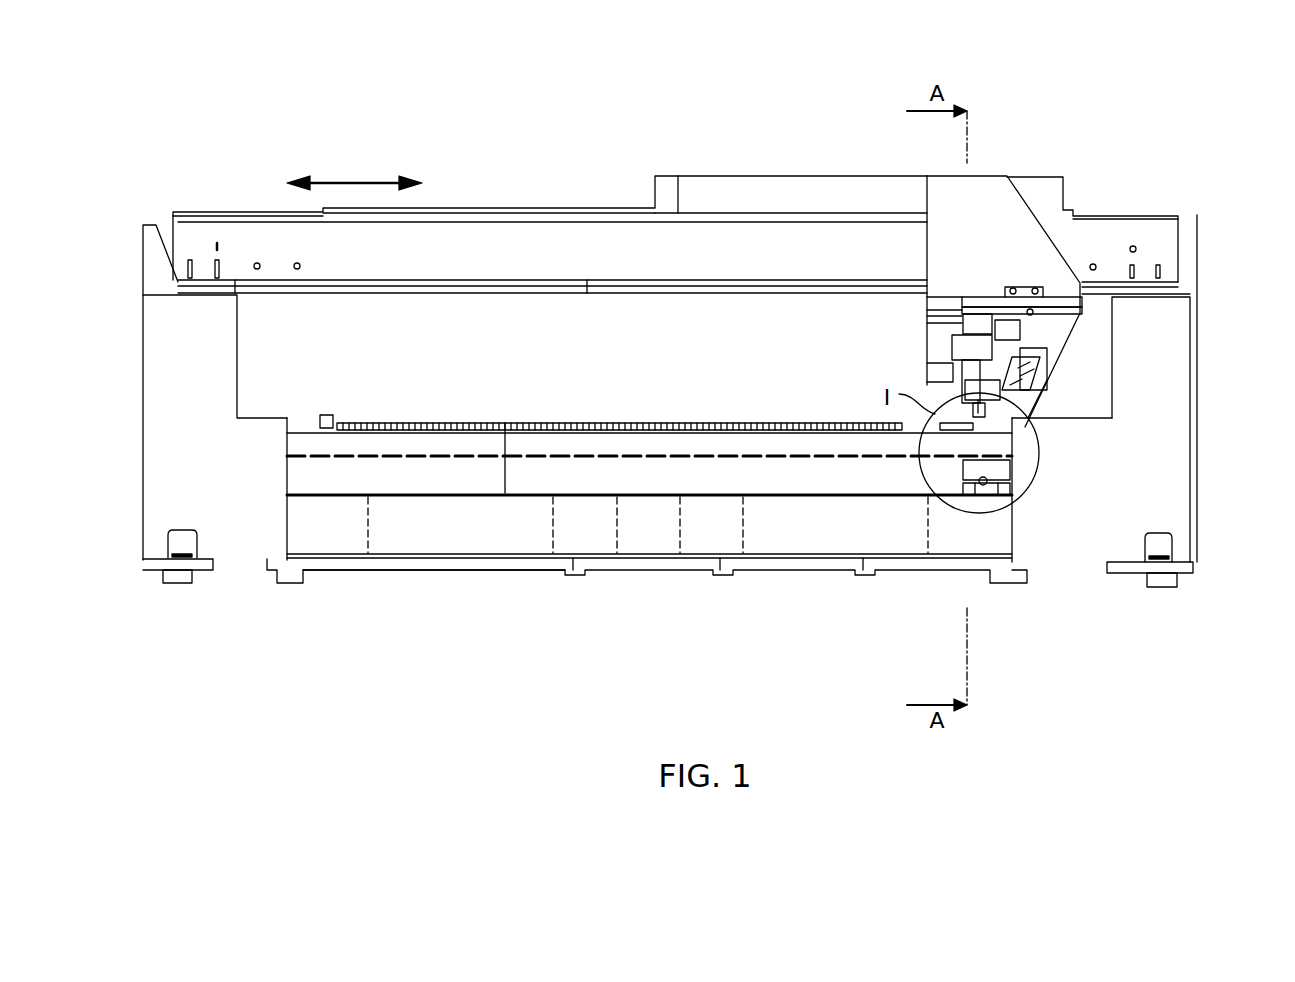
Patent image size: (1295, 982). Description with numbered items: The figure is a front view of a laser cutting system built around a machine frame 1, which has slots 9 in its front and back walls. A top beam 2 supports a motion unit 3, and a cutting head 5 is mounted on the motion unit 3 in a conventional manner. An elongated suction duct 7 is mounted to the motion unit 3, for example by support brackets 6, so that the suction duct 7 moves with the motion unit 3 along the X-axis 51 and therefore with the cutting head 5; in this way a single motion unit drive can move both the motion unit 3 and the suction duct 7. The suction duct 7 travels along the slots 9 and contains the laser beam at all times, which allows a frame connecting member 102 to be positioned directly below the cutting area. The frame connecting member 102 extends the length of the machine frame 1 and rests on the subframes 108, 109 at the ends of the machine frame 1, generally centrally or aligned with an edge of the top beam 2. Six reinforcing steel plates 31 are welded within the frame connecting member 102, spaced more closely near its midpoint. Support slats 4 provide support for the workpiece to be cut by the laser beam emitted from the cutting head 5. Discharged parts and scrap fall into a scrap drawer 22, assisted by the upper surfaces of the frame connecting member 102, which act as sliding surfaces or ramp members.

The machine frame 1 is at (1183, 374).
The top beam 2 is at (1153, 231).
The motion unit 3 is at (1047, 333).
The support slats 4 is at (370, 433).
The cutting head 5 is at (1008, 422).
The support brackets 6 is at (1030, 397).
The suction duct 7 is at (1010, 395).
The slots 9 is at (842, 480).
The scrap drawer 22 is at (365, 567).
The reinforcing steel plates 31 is at (548, 528).
The X-axis 51 is at (362, 181).
The frame connecting member 102 is at (505, 423).
The subframe 108 is at (163, 420).
The subframe 109 is at (1182, 473).